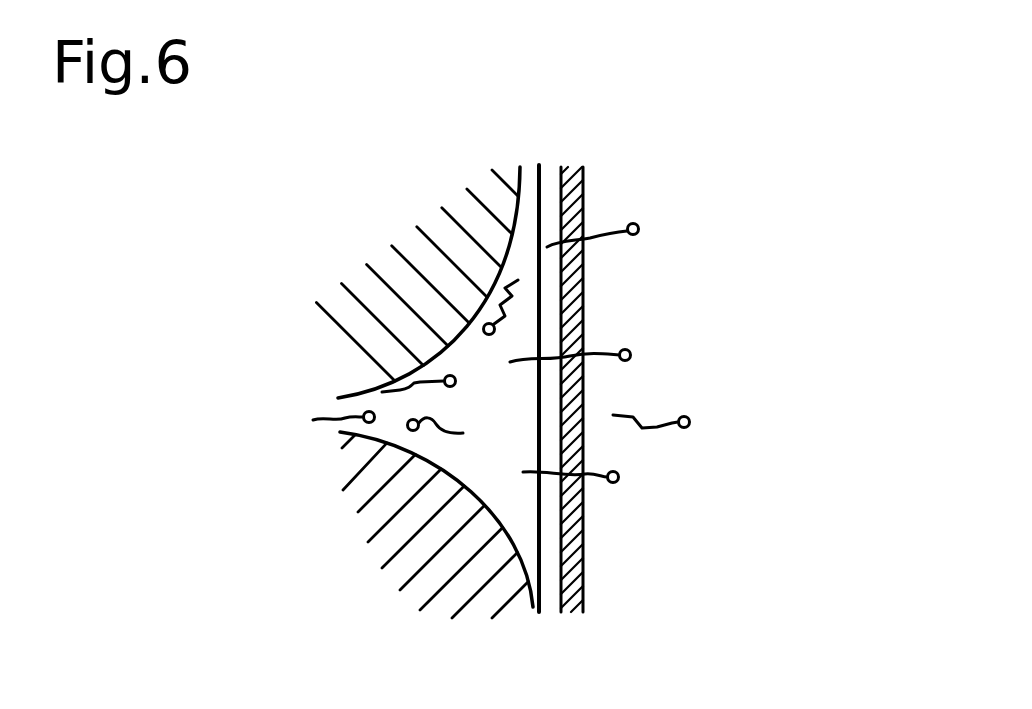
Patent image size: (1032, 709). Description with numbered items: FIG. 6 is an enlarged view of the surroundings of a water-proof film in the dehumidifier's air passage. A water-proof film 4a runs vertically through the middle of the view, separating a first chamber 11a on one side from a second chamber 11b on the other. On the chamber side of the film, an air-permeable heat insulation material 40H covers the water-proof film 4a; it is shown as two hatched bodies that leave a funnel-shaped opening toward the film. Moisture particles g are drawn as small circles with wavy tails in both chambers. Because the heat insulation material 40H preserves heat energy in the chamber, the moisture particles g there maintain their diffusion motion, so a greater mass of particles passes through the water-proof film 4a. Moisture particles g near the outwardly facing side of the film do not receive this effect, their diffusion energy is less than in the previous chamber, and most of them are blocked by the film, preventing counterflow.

The air-permeable heat insulation material 40H is at (410, 240).
The first water-proof film 4a is at (585, 180).
The first chamber 11a is at (255, 300).
The second chamber 11b is at (902, 350).
The moisture particles g is at (455, 385).